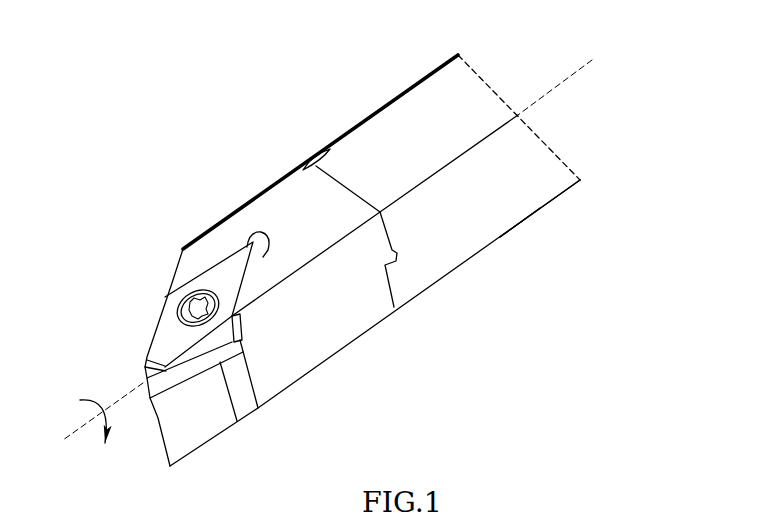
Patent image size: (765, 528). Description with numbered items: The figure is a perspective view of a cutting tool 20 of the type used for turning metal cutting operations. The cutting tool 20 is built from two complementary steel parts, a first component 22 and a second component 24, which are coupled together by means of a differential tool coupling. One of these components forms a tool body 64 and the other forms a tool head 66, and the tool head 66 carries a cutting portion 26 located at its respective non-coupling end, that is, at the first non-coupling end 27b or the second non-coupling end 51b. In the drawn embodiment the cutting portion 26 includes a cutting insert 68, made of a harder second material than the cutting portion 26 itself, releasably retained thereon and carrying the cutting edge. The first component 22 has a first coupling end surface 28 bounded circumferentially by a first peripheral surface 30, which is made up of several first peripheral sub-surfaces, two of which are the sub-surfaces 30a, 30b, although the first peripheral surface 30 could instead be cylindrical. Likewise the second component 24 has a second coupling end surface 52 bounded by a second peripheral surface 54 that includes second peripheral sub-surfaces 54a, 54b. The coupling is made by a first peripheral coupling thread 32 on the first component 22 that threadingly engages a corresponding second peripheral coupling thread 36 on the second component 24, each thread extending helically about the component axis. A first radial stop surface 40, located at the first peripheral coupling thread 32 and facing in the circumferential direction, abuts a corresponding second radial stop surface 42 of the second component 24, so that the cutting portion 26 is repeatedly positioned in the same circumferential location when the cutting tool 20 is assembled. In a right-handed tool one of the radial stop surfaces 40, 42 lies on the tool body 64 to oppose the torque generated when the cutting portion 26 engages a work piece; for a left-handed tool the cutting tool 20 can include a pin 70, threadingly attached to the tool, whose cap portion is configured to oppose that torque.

The cutting tool 20 is at (128, 182).
The first component 22 is at (336, 97).
The second component 24 is at (208, 204).
The cutting portion 26 is at (128, 306).
The first non-coupling end 27b is at (598, 107).
The first coupling end surface 28 is at (298, 172).
The first peripheral surface 30 is at (540, 172).
The first peripheral sub-surface 30a is at (532, 193).
The first peripheral sub-surface 30b is at (462, 103).
The first peripheral coupling thread 32 is at (330, 170).
The second peripheral coupling thread 36 is at (394, 308).
The first radial stop surface 40 is at (383, 262).
The second radial stop surface 42 is at (385, 266).
The second non-coupling end 51b is at (130, 472).
The second coupling end surface 52 is at (393, 290).
The second peripheral surface 54 is at (318, 338).
The second peripheral sub-surface 54a is at (300, 353).
The second peripheral sub-surface 54b is at (217, 247).
The tool body 64 is at (555, 243).
The tool head 66 is at (250, 437).
The cutting insert 68 is at (160, 341).
The pin 70 is at (310, 148).